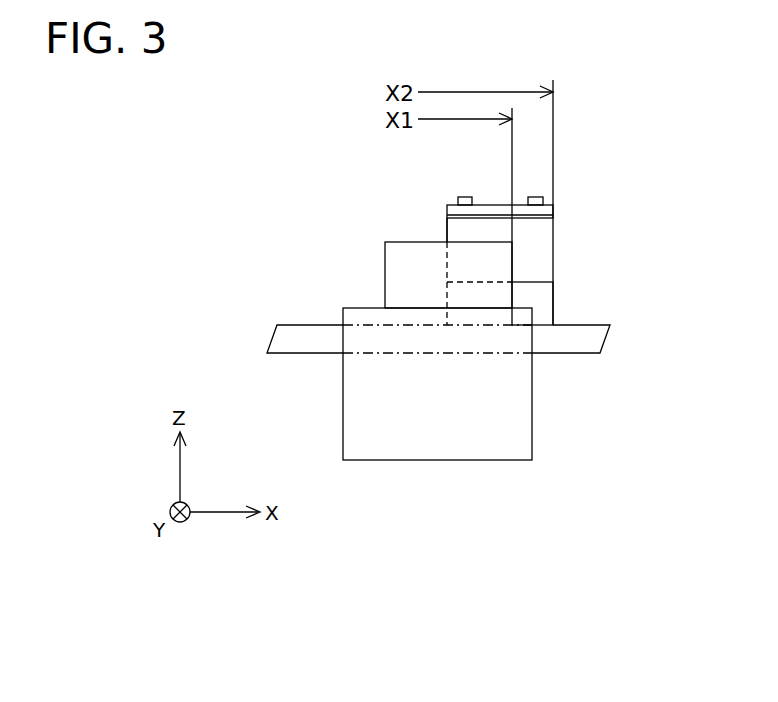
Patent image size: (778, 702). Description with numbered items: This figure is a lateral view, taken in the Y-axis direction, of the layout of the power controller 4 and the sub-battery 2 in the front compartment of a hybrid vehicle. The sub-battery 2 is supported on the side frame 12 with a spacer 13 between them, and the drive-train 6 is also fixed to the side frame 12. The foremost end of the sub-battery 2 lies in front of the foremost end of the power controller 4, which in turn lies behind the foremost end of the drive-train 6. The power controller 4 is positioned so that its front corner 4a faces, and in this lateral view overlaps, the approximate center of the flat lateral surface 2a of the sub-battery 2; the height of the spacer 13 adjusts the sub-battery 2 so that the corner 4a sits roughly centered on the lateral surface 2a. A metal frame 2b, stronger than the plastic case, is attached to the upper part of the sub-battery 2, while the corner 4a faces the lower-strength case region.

The sub-battery 2 is at (514, 205).
The lateral surface 2a is at (470, 233).
The metal frame 2b is at (543, 210).
The power controller 4 is at (402, 273).
The front corner 4a is at (516, 243).
The spacer 13 is at (540, 297).
The side frame 12 is at (567, 352).
The drive-train 6 is at (518, 433).